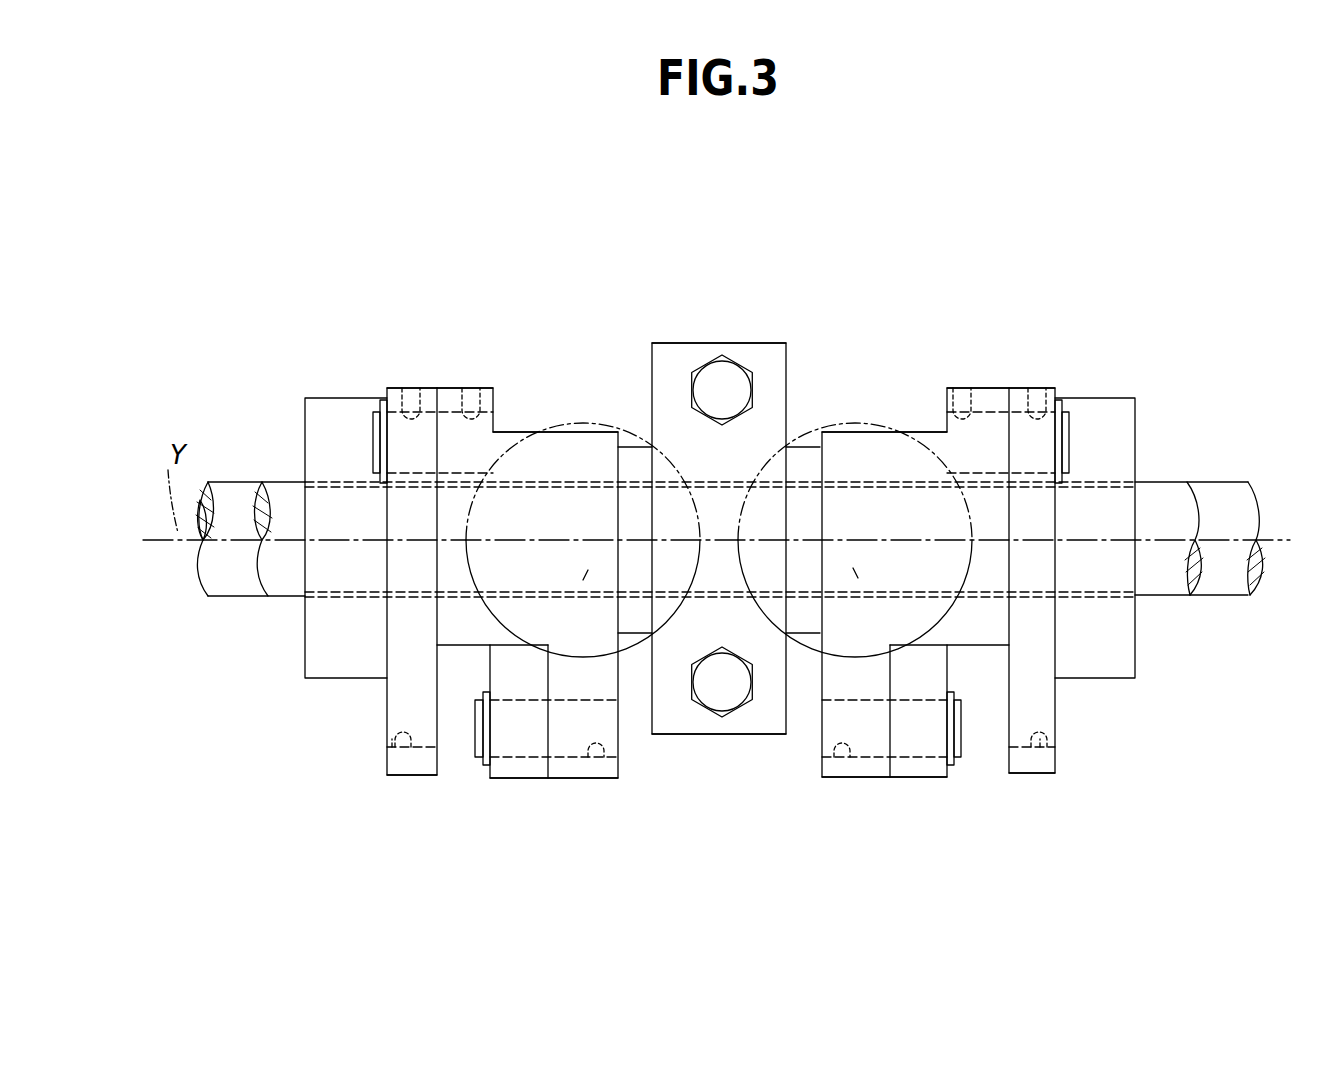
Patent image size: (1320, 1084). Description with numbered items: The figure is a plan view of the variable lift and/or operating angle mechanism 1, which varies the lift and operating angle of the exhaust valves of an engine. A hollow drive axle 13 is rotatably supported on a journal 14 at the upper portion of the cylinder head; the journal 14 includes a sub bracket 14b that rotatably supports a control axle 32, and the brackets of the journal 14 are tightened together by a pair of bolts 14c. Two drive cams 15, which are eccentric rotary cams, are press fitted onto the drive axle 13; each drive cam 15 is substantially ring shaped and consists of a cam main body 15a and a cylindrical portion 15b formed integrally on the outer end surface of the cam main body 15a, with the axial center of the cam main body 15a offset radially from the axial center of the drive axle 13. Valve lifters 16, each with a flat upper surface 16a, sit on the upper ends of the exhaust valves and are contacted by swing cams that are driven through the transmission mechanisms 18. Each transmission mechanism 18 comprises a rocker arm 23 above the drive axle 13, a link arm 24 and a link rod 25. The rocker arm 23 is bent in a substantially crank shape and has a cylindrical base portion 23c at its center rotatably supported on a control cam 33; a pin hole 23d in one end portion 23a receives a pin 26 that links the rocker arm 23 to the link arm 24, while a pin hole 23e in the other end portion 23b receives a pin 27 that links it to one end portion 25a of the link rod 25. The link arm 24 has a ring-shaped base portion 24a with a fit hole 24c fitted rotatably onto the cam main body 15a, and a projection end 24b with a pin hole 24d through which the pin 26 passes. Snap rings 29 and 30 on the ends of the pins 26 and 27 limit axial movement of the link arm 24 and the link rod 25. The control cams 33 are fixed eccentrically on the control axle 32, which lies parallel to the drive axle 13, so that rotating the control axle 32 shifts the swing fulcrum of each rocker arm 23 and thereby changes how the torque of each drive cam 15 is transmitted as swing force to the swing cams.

The variable lift and/or operating angle mechanism 1 is at (735, 261).
The hollow drive axle 13 is at (230, 495).
The journal 14 is at (649, 340).
The sub bracket 14b is at (690, 722).
The bolts 14c is at (735, 375).
The drive cam 15 is at (302, 664).
The cam main body 15a is at (395, 715).
The cylindrical portion 15b is at (322, 637).
The valve lifter 16 is at (612, 420).
The flat upper surface 16a is at (575, 420).
The transmission mechanism 18 is at (499, 390).
The rocker arm 23 is at (507, 438).
The one end portion of rocker arm 23a is at (453, 396).
The other end portion of rocker arm 23b is at (580, 780).
The cylindrical base portion 23c is at (498, 578).
The pin hole 23d is at (477, 403).
The pin hole 23e is at (596, 757).
The link arm 24 is at (386, 698).
The ring-shaped base portion 24a is at (403, 775).
The projection end 24b is at (399, 390).
The fit hole 24c is at (403, 745).
The pin hole 24d is at (418, 402).
The link rod 25 is at (527, 784).
The one end portion of link rod 25a is at (505, 772).
The pin 26 is at (372, 432).
The pin 27 is at (474, 738).
The snap ring 29 is at (378, 397).
The snap ring 30 is at (483, 766).
The control axle 32 is at (275, 568).
The control cam 33 is at (583, 580).